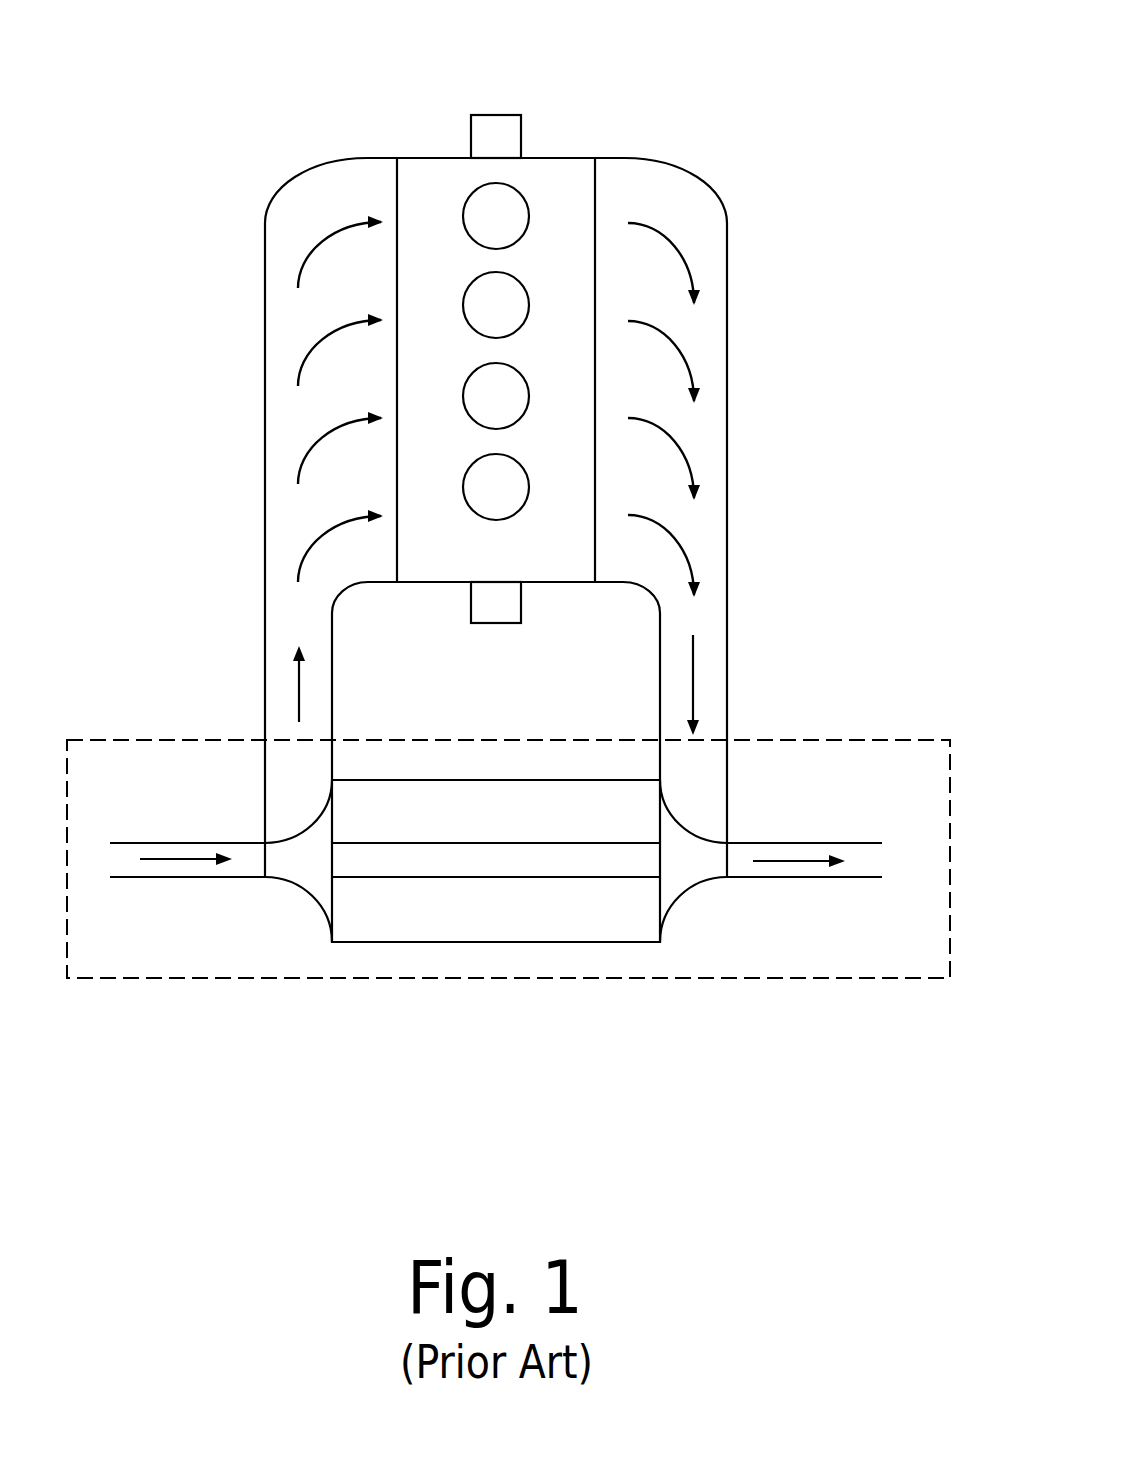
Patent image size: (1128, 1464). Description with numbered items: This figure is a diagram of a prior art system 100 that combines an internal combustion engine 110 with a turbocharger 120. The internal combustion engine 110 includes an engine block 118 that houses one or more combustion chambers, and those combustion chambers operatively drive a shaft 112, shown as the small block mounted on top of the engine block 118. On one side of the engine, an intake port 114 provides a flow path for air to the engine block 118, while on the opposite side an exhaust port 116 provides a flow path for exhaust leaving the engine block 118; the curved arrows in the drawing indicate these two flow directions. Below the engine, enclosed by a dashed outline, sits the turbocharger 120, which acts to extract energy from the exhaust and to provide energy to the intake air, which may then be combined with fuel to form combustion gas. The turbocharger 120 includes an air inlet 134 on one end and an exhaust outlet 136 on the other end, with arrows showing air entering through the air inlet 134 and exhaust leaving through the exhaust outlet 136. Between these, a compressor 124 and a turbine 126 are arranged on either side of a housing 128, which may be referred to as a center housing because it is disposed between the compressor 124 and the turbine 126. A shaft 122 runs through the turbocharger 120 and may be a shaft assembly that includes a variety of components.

The system 100 is at (721, 55).
The internal combustion engine 110 is at (447, 157).
The shaft 112 is at (497, 115).
The intake port 114 is at (293, 180).
The exhaust port 116 is at (718, 200).
The engine block 118 is at (523, 571).
The turbocharger 120 is at (805, 740).
The shaft 122 is at (493, 877).
The compressor 124 is at (307, 892).
The turbine 126 is at (690, 887).
The housing 128 is at (523, 824).
The air inlet 134 is at (213, 842).
The exhaust outlet 136 is at (807, 843).